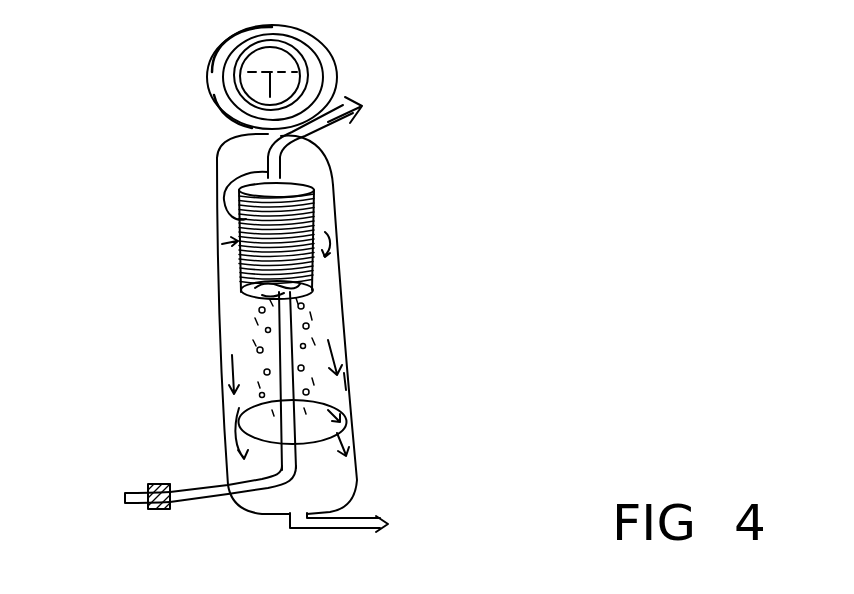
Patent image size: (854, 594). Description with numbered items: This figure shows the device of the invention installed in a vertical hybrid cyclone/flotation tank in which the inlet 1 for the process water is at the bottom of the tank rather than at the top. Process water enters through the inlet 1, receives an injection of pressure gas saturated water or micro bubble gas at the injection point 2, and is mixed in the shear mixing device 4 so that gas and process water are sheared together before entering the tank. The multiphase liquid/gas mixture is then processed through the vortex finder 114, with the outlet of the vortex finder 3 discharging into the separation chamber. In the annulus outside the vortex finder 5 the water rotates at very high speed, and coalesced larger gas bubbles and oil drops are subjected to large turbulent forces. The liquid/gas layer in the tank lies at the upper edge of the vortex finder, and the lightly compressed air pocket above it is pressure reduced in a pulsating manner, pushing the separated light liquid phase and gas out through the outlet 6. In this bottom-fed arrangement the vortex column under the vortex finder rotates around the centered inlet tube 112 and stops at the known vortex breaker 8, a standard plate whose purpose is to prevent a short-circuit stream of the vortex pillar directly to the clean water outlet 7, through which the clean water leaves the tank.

The inlet 1 is at (114, 501).
The injection of pressure gas saturated water/micro bubble gas 2 is at (159, 484).
The outlet of vortex finder in separation chamber 3 is at (345, 200).
The shear mixing device 4 is at (166, 513).
The vortex finder 5 is at (229, 272).
The vortex finder 114 is at (148, 274).
The outlet 6 is at (364, 105).
The clean water outlet 7 is at (348, 405).
The vortex breaker 8 is at (392, 523).
The centered inlet tube 112 is at (282, 349).